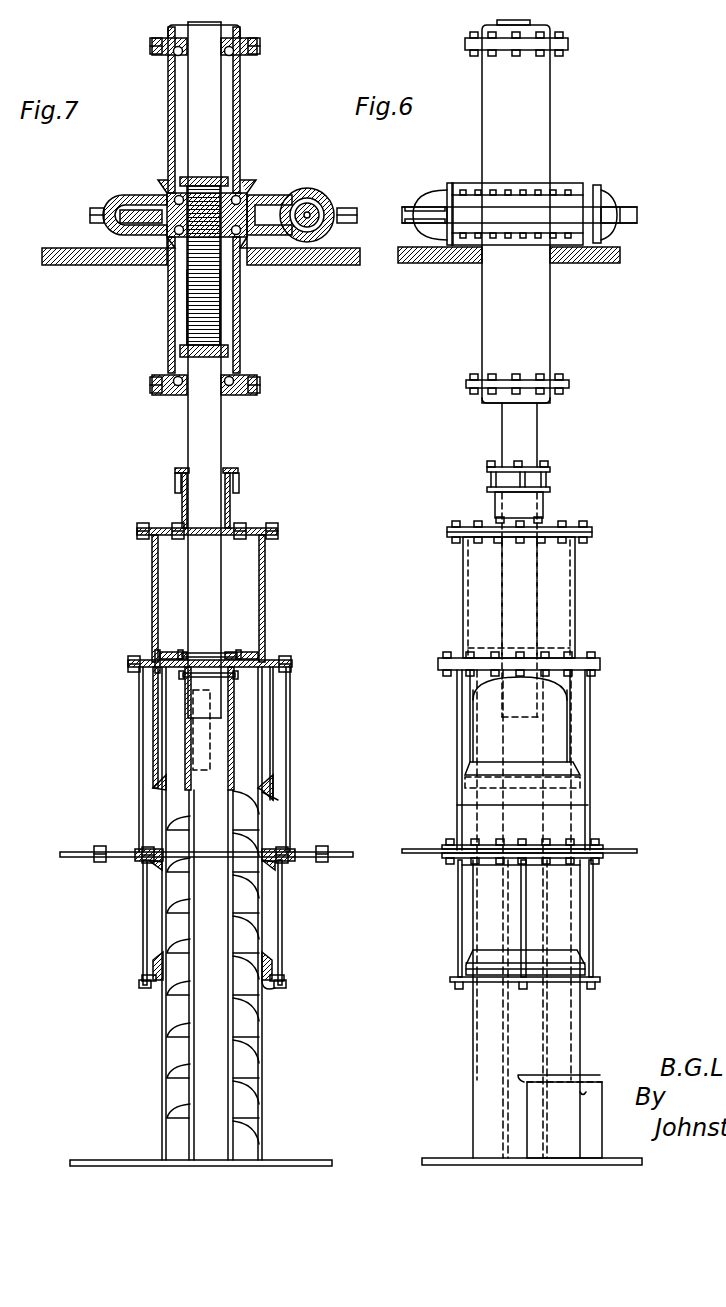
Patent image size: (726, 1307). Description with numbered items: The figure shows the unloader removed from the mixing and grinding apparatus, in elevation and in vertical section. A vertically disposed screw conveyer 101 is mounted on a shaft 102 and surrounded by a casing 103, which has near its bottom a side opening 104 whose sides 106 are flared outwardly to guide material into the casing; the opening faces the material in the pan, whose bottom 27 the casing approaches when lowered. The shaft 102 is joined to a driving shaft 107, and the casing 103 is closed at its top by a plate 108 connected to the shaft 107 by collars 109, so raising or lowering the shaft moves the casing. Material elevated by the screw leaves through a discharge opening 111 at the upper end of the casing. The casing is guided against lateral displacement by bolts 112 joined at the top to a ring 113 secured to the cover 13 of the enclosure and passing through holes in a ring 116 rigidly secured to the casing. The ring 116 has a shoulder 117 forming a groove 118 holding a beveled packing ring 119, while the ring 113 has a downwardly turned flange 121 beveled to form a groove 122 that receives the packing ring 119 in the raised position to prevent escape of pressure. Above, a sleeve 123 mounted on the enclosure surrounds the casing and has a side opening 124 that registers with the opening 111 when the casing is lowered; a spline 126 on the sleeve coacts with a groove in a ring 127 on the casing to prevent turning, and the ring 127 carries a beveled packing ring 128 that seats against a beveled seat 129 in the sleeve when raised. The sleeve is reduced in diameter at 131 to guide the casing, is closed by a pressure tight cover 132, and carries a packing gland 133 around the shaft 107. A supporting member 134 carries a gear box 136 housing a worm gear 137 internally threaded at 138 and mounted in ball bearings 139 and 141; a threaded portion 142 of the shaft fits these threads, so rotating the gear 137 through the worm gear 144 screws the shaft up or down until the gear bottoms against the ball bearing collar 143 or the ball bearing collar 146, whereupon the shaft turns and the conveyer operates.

In FIG. 7, the cover 13 is at (343, 855).
In FIG. 6, the cover 13 is at (423, 849).
In FIG. 7, the bottom 27 is at (298, 1162).
In FIG. 6, the bottom 27 is at (440, 1160).
In FIG. 7, the screw conveyer 101 is at (182, 1116).
In FIG. 7, the shaft 102 is at (188, 1131).
In FIG. 6, the shaft 102 is at (500, 1026).
In FIG. 7, the casing 103 is at (162, 1055).
In FIG. 6, the casing 103 is at (474, 1055).
In FIG. 6, the side opening 104 is at (605, 1082).
In FIG. 6, the flared sides 106 is at (578, 1092).
In FIG. 7, the driving shaft 107 is at (188, 440).
In FIG. 6, the driving shaft 107 is at (537, 432).
In FIG. 7, the plate 108 is at (172, 658).
In FIG. 7, the collars 109 is at (186, 650).
In FIG. 7, the discharge opening 111 is at (257, 712).
In FIG. 6, the discharge opening 111 is at (567, 709).
In FIG. 7, the bolts 112 is at (282, 912).
In FIG. 6, the bolts 112 is at (594, 912).
In FIG. 7, the ring 113 is at (285, 862).
In FIG. 7, the ring 116 is at (284, 980).
In FIG. 6, the ring 116 is at (602, 980).
In FIG. 7, the shoulder 117 is at (273, 968).
In FIG. 6, the shoulder 117 is at (585, 970).
In FIG. 7, the groove 118 is at (266, 980).
In FIG. 7, the beveled packing ring 119 is at (270, 958).
In FIG. 6, the beveled packing ring 119 is at (572, 955).
In FIG. 7, the flange 121 is at (158, 862).
In FIG. 6, the flange 121 is at (580, 863).
In FIG. 7, the groove 122 is at (160, 870).
In FIG. 7, the sleeve 123 is at (141, 713).
In FIG. 6, the sleeve 123 is at (588, 812).
In FIG. 7, the side opening 124 is at (283, 740).
In FIG. 6, the side opening 124 is at (590, 729).
In FIG. 7, the spline 126 is at (155, 737).
In FIG. 7, the ring 127 is at (160, 785).
In FIG. 7, the beveled packing ring 128 is at (266, 778).
In FIG. 6, the beveled packing ring 128 is at (575, 766).
In FIG. 7, the beveled seat 129 is at (262, 675).
In FIG. 6, the beveled seat 129 is at (575, 676).
In FIG. 7, the reduced portion 131 is at (265, 598).
In FIG. 6, the reduced portion 131 is at (575, 587).
In FIG. 7, the pressure tight cover 132 is at (265, 528).
In FIG. 6, the pressure tight cover 132 is at (590, 527).
In FIG. 7, the packing gland 133 is at (232, 500).
In FIG. 6, the packing gland 133 is at (548, 502).
In FIG. 7, the supporting member 134 is at (105, 268).
In FIG. 7, the gear box 136 is at (108, 197).
In FIG. 6, the gear box 136 is at (605, 197).
In FIG. 7, the worm gear 137 is at (262, 210).
In FIG. 7, the internal threads 138 is at (222, 225).
In FIG. 7, the ball bearing 139 is at (165, 240).
In FIG. 7, the ball bearing 141 is at (165, 193).
In FIG. 7, the threaded portion 142 is at (187, 313).
In FIG. 7, the ball bearing collar 143 is at (185, 348).
In FIG. 7, the worm gear 144 is at (318, 200).
In FIG. 7, the ball bearing collar 146 is at (228, 183).